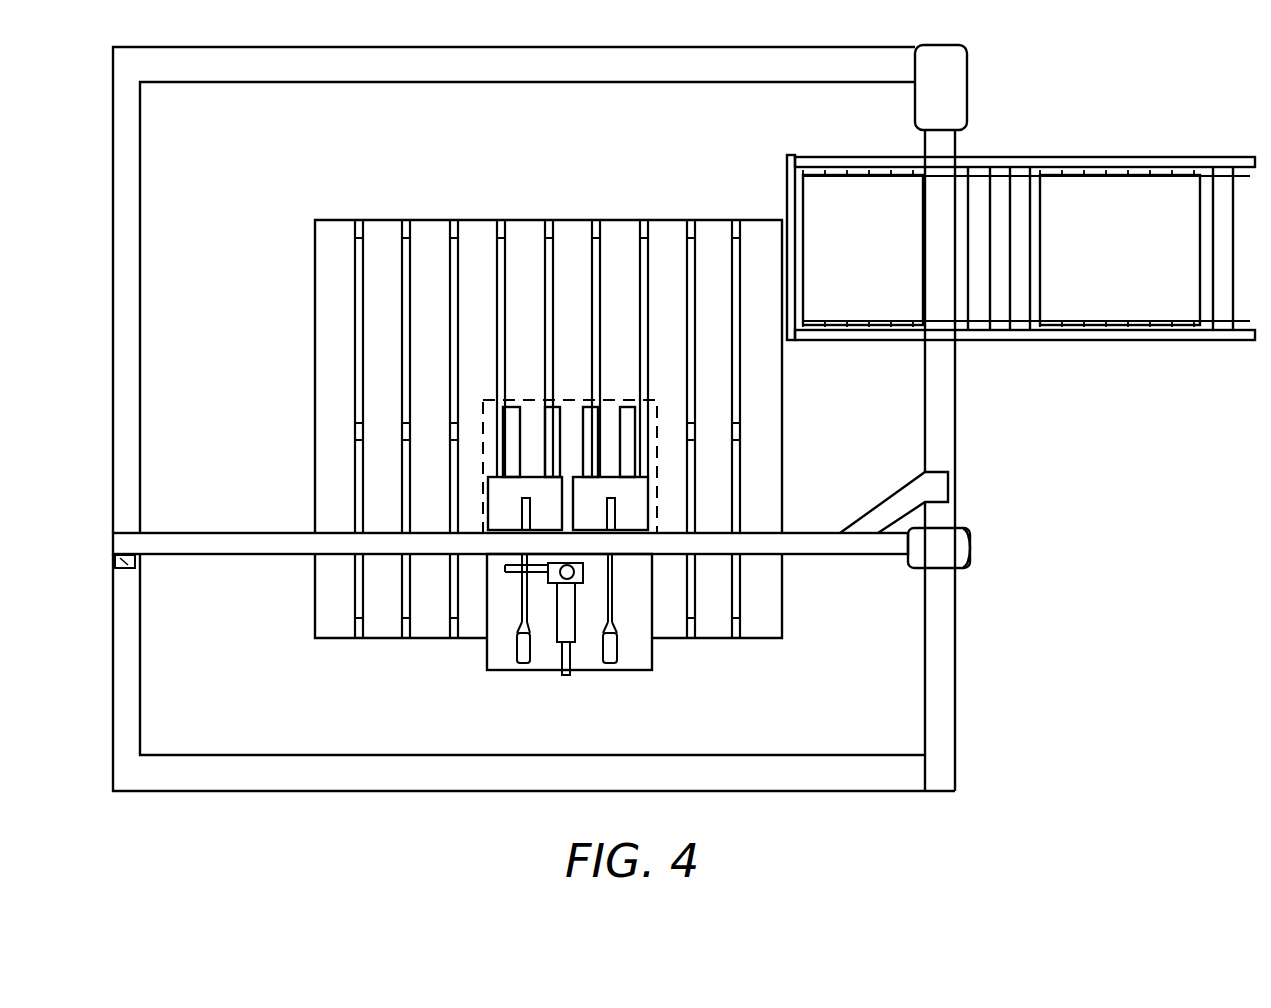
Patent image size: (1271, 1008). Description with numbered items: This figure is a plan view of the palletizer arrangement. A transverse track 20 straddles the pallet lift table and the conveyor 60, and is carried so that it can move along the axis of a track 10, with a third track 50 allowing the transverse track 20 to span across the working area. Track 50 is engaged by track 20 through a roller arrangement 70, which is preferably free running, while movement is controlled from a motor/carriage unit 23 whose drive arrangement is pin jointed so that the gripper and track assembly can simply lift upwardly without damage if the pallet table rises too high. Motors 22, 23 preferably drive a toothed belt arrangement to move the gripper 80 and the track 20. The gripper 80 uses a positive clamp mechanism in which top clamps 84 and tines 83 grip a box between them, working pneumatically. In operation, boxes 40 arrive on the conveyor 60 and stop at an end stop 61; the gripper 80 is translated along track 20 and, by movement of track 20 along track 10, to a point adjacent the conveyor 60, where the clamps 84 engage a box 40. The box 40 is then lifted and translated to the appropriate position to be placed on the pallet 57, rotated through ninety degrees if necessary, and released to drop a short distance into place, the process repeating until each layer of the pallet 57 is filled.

The track 10 is at (957, 430).
The transverse track 20 is at (258, 545).
The motor 22 is at (950, 80).
The motor/carriage unit 23 is at (952, 548).
The box 40 is at (1135, 200).
The third track 50 is at (130, 273).
The pallet 57 is at (437, 239).
The conveyor 60 is at (1035, 338).
The end stop 61 is at (787, 187).
The roller arrangement 70 is at (138, 567).
The gripper 80 is at (540, 560).
The tines 83 is at (586, 436).
The top clamps 84 is at (480, 497).